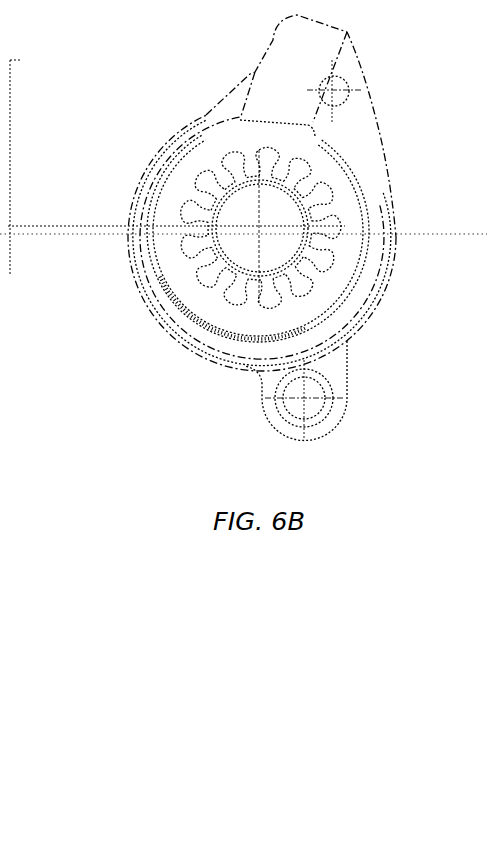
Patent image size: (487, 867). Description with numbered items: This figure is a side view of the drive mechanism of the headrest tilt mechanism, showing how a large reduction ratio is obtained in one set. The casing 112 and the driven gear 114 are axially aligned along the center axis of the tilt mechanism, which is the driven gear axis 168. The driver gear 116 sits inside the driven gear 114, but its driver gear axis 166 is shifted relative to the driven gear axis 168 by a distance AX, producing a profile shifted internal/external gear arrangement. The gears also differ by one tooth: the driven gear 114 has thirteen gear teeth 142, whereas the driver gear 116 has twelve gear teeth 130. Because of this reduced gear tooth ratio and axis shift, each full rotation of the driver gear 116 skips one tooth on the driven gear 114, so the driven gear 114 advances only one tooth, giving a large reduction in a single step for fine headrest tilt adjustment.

The axis shift distance AX is at (243, 164).
The casing 112 is at (208, 342).
The driven gear 114 is at (342, 260).
The driver gear 116 is at (308, 263).
The gear teeth 130 is at (317, 223).
The gear teeth 142 is at (330, 215).
The driver gear axis 166 is at (250, 210).
The driven gear axis 168 is at (246, 243).